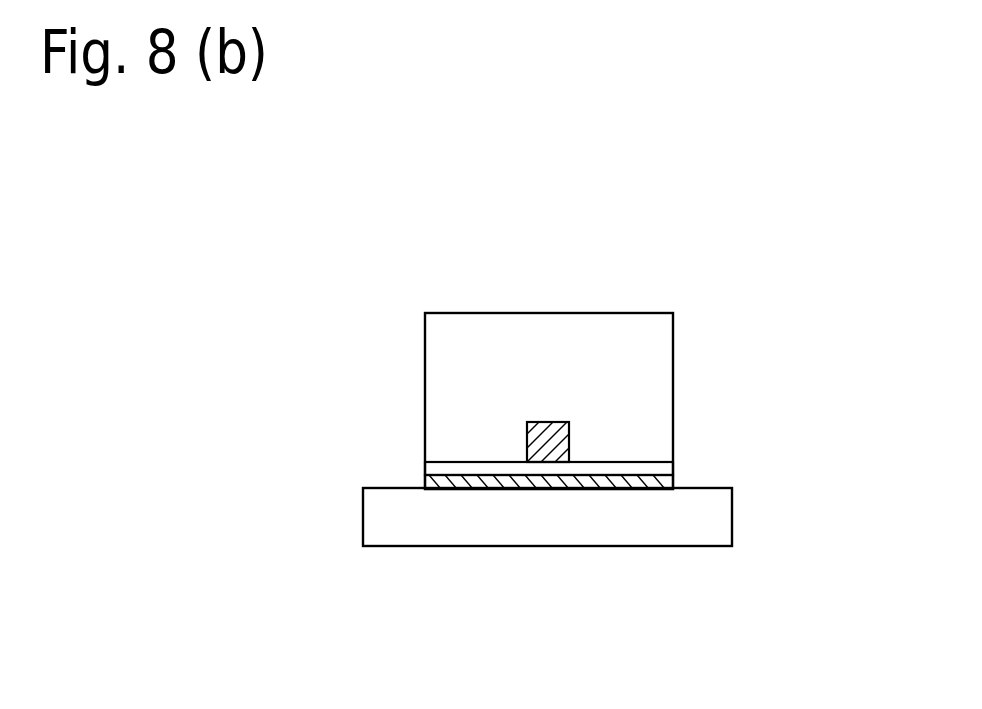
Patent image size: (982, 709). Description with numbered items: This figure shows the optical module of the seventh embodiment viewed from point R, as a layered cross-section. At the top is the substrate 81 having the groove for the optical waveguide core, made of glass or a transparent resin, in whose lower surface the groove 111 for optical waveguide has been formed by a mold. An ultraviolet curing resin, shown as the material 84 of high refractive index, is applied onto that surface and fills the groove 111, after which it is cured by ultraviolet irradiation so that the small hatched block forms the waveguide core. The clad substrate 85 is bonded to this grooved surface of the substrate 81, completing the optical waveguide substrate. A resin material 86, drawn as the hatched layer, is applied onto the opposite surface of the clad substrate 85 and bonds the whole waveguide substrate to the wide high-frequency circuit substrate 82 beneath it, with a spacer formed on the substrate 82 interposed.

The substrate having a groove for optical waveguide core 81 is at (653, 410).
The high-frequency circuit substrate 82 is at (632, 527).
The material of high refractive index 84 is at (530, 423).
The clad substrate 85 is at (476, 468).
The resin material 86 is at (507, 483).
The groove for optical waveguide 111 is at (554, 425).